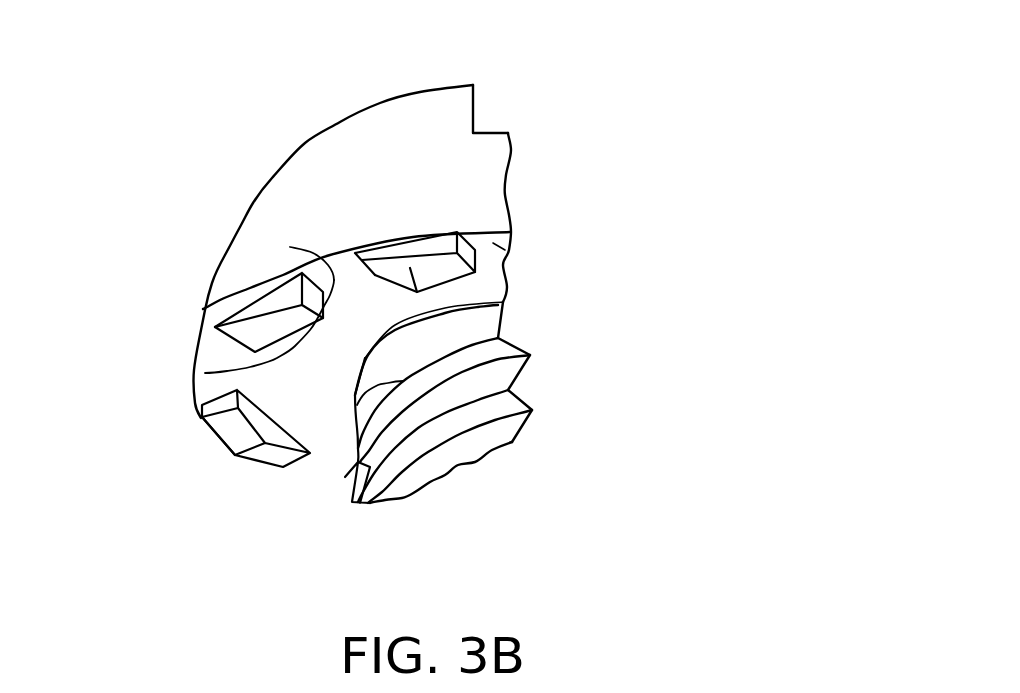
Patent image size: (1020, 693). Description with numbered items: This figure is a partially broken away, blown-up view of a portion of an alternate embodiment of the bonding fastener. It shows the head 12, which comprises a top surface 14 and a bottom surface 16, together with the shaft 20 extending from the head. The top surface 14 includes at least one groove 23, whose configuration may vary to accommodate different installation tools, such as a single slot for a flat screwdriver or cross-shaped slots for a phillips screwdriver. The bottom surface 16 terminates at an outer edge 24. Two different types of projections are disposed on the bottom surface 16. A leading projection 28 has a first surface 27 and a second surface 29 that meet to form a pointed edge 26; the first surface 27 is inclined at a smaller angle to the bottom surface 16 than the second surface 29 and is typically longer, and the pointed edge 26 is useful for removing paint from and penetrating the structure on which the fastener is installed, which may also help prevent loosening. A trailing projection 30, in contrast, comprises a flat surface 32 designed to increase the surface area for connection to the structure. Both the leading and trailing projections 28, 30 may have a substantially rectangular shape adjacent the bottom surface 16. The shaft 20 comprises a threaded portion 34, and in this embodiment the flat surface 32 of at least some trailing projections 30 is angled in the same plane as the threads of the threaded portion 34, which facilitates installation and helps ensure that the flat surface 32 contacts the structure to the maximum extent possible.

The head 12 is at (508, 168).
The top surface 14 is at (382, 103).
The bottom surface 16 is at (493, 243).
The shaft 20 is at (520, 374).
The groove 23 is at (475, 130).
The outer edge 24 is at (510, 218).
The pointed edge 26 is at (227, 371).
The first surface 27 is at (258, 327).
The leading projection 28 is at (273, 302).
The second surface 29 is at (290, 247).
The trailing projection 30 is at (407, 250).
The flat surface 32 is at (441, 284).
The threaded portion 34 is at (357, 405).